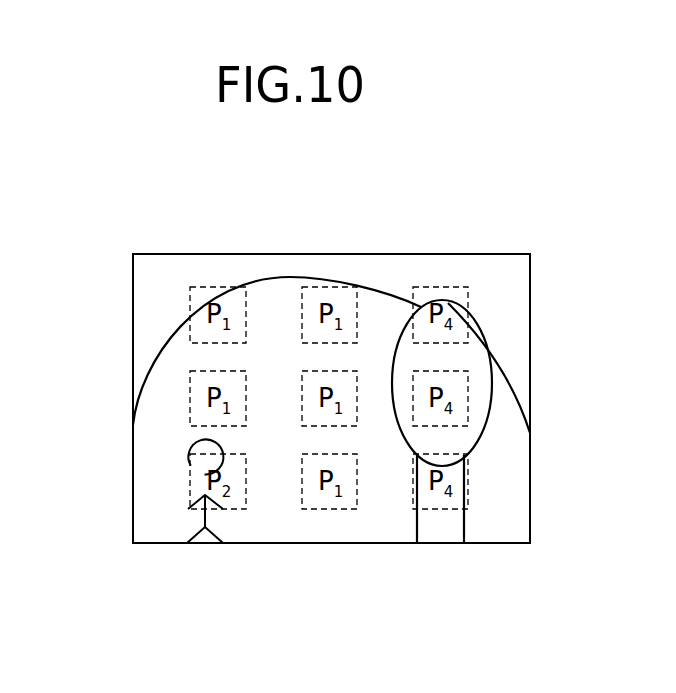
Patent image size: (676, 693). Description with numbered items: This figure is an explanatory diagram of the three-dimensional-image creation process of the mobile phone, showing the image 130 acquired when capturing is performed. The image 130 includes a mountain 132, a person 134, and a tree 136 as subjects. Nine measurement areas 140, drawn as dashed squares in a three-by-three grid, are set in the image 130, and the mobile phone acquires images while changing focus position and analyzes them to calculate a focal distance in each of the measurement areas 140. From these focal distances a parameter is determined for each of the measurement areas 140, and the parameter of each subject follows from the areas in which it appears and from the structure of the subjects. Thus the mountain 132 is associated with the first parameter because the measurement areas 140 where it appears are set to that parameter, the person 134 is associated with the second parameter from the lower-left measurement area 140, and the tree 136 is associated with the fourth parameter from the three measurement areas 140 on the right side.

The image 130 is at (359, 254).
The mountain 132 is at (274, 295).
The person 134 is at (190, 450).
The tree 136 is at (477, 347).
The measurement area 140 is at (203, 286).